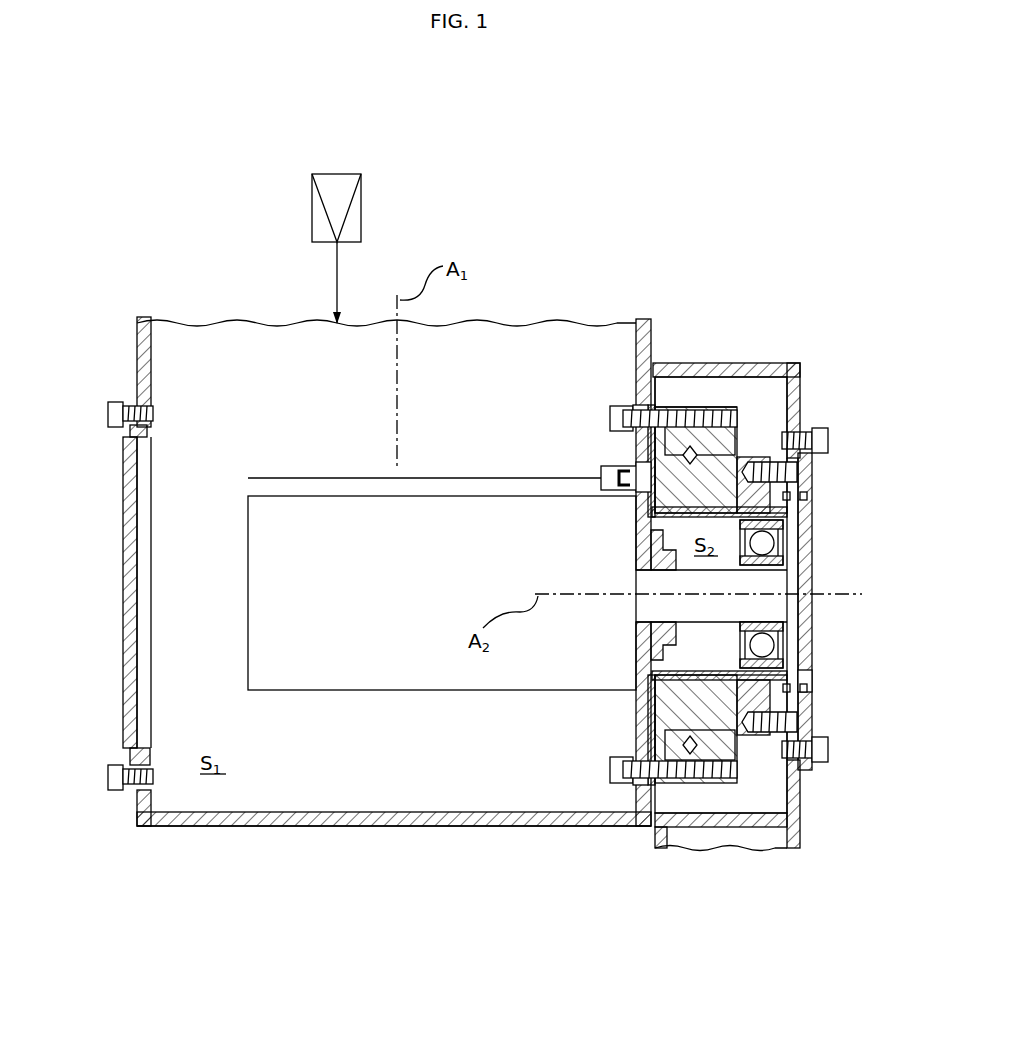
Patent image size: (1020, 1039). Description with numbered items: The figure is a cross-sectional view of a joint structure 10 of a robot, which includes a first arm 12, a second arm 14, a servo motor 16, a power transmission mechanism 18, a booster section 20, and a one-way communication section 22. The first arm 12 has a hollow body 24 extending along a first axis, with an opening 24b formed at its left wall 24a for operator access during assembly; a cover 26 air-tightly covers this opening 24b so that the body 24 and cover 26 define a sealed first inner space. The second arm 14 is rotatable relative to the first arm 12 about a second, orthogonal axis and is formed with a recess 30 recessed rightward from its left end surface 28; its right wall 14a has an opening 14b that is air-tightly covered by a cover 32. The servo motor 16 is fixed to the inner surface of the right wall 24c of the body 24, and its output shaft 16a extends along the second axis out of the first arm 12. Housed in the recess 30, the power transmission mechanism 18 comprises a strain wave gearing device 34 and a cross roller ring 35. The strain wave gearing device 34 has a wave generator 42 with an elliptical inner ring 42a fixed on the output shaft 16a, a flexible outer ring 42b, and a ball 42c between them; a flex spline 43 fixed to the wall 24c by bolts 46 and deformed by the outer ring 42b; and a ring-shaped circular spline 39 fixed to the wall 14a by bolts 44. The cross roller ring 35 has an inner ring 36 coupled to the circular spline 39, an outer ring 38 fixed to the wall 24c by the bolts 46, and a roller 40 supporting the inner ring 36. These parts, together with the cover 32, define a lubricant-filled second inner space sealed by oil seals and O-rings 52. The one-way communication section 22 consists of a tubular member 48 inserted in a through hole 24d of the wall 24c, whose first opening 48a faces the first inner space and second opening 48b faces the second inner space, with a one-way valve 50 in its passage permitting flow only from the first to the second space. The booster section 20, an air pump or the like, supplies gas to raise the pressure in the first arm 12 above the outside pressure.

The joint structure 10 is at (764, 104).
The first arm 12 is at (412, 852).
The second arm 14 is at (776, 362).
The right wall 14a is at (795, 422).
The opening 14b is at (805, 680).
The servo motor 16 is at (314, 599).
The output shaft 16a is at (704, 617).
The power transmission mechanism 18 is at (766, 455).
The booster section 20 is at (332, 172).
The one-way communication section 22 is at (604, 493).
The body 24 is at (323, 828).
The left wall 24a is at (143, 350).
The opening 24b is at (130, 452).
The right wall 24c is at (643, 342).
The through hole 24d is at (633, 484).
The cover 26 is at (123, 565).
The left end surface 28 is at (645, 376).
The recess 30 is at (774, 402).
The cover 32 is at (805, 532).
The strain wave gearing device 34 is at (789, 545).
The cross roller ring 35 is at (668, 406).
The inner ring 36 is at (660, 700).
The outer ring 38 is at (722, 437).
The circular spline 39 is at (770, 735).
The roller 40 is at (680, 450).
The wave generator 42 is at (852, 612).
The inner ring 42a is at (785, 623).
The outer ring 42b is at (776, 667).
The ball 42c is at (766, 646).
The flex spline 43 is at (802, 506).
The bolts 44 is at (806, 472).
The bolts 46 is at (700, 430).
The tubular member 48 is at (616, 478).
The first opening 48a is at (614, 488).
The second opening 48b is at (637, 426).
The one-way valve 50 is at (620, 468).
The O-rings 52 is at (790, 690).